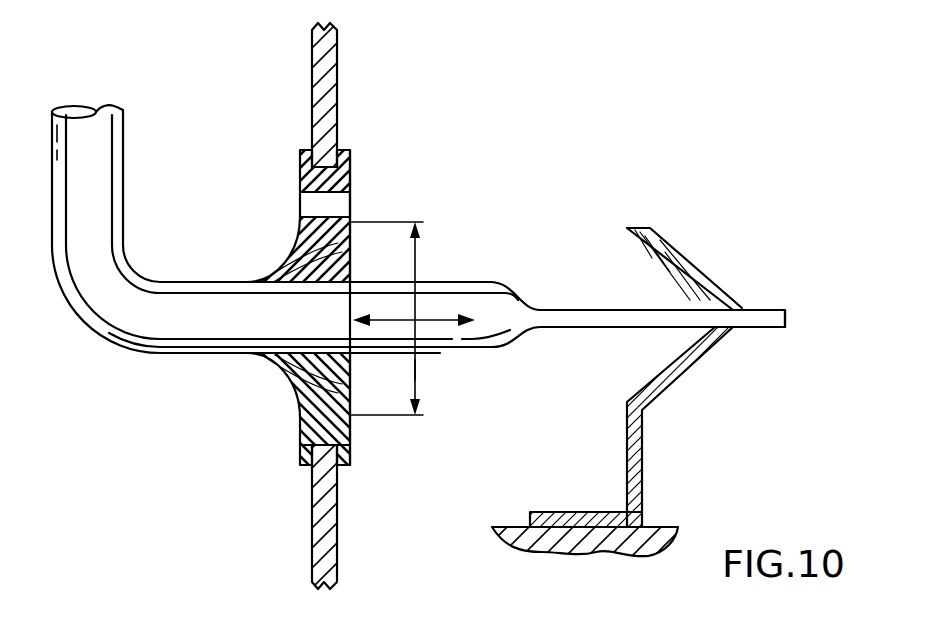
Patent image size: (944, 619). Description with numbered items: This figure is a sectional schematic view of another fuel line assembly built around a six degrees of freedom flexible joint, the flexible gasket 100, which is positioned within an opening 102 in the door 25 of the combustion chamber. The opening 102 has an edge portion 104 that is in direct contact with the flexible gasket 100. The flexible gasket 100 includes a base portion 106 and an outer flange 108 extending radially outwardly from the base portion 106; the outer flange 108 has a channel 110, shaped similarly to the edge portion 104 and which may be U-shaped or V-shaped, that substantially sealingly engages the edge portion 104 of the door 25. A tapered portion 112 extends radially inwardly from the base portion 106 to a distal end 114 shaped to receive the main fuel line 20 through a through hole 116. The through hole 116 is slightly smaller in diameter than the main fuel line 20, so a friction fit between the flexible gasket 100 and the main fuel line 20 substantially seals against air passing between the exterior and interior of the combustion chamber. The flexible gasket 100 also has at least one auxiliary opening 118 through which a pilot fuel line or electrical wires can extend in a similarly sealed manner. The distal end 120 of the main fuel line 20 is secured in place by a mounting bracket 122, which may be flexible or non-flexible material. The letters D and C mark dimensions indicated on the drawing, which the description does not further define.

The main fuel line 20 is at (468, 352).
The door 25 is at (333, 92).
The flexible gasket 100 is at (317, 320).
The opening 102 is at (298, 421).
The edge portion 104 is at (300, 150).
The base portion 106 is at (352, 437).
The outer flange 108 is at (348, 464).
The channel 110 is at (326, 462).
The tapered portion 112 is at (283, 378).
The distal end 114 is at (252, 272).
The through hole 116 is at (244, 306).
The auxiliary opening 118 is at (302, 204).
The distal end of main fuel line 120 is at (763, 307).
The mounting bracket 122 is at (677, 380).
The diameter dimension D is at (428, 320).
The dimension C is at (418, 363).